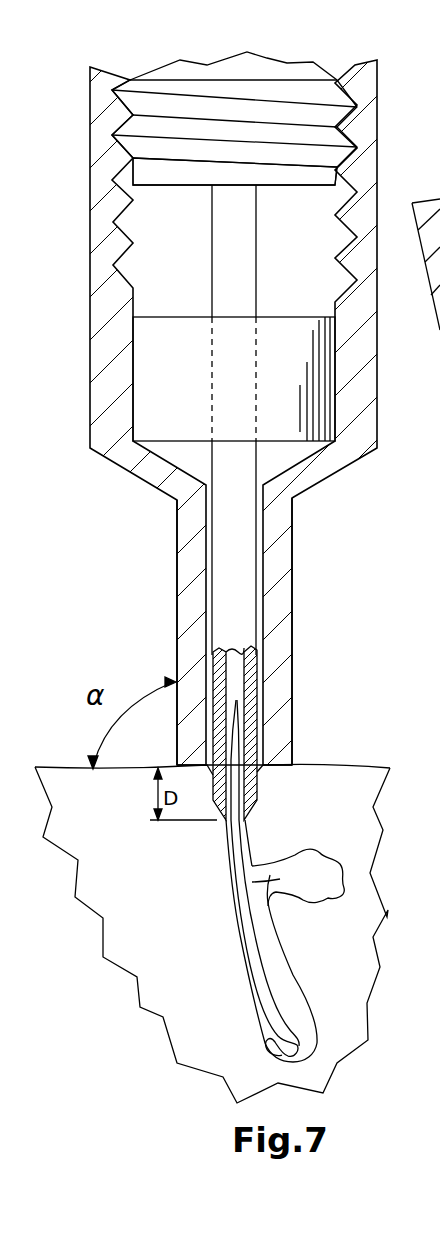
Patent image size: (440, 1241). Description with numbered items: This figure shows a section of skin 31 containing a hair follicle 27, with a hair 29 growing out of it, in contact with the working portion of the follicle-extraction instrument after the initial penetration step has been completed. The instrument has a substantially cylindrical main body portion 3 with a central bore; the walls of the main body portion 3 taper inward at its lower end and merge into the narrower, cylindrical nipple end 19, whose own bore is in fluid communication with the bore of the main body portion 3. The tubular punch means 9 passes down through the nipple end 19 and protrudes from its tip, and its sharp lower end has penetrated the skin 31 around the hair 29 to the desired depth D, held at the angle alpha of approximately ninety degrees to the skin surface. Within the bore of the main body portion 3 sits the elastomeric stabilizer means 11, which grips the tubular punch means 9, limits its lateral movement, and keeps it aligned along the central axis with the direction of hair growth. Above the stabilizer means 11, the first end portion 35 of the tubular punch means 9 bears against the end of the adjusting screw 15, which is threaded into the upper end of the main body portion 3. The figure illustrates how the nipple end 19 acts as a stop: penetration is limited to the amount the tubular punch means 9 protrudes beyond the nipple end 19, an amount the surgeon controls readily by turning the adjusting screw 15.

The main body portion 3 is at (377, 132).
The tubular punch means 9 is at (259, 790).
The stabilizer means 11 is at (300, 317).
The adjusting screw 15 is at (270, 70).
The nipple end portion 19 is at (292, 606).
The hair follicle 27 is at (262, 1044).
The hair 29 is at (287, 870).
The skin 31 is at (351, 767).
The first end portion of the tubular punch means 35 is at (235, 185).